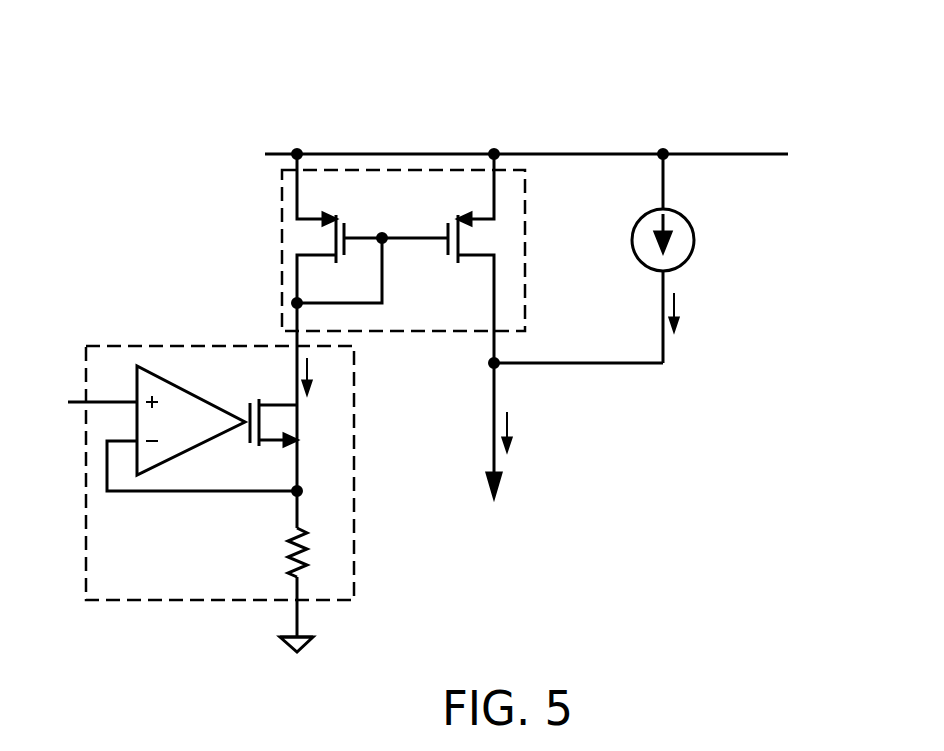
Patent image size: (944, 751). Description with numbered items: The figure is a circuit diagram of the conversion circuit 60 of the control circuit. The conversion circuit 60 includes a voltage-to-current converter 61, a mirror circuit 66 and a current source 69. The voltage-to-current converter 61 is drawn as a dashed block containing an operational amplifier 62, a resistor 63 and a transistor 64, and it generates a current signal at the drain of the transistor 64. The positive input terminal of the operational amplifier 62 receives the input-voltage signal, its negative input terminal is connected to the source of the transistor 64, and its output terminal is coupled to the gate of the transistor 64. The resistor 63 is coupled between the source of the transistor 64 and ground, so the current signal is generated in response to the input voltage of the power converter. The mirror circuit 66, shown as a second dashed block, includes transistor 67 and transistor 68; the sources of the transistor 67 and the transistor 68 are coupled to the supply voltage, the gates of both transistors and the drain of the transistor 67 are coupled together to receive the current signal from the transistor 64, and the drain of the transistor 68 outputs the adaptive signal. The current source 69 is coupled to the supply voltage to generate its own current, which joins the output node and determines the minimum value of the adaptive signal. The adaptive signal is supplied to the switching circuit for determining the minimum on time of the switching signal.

The conversion circuit 60 is at (891, 60).
The voltage-to-current converter 61 is at (87, 346).
The operational amplifier 62 is at (157, 367).
The resistor 63 is at (282, 563).
The transistor 64 is at (250, 405).
The mirror circuit 66 is at (452, 331).
The transistor 67 is at (334, 242).
The transistor 68 is at (448, 230).
The current source 69 is at (694, 236).